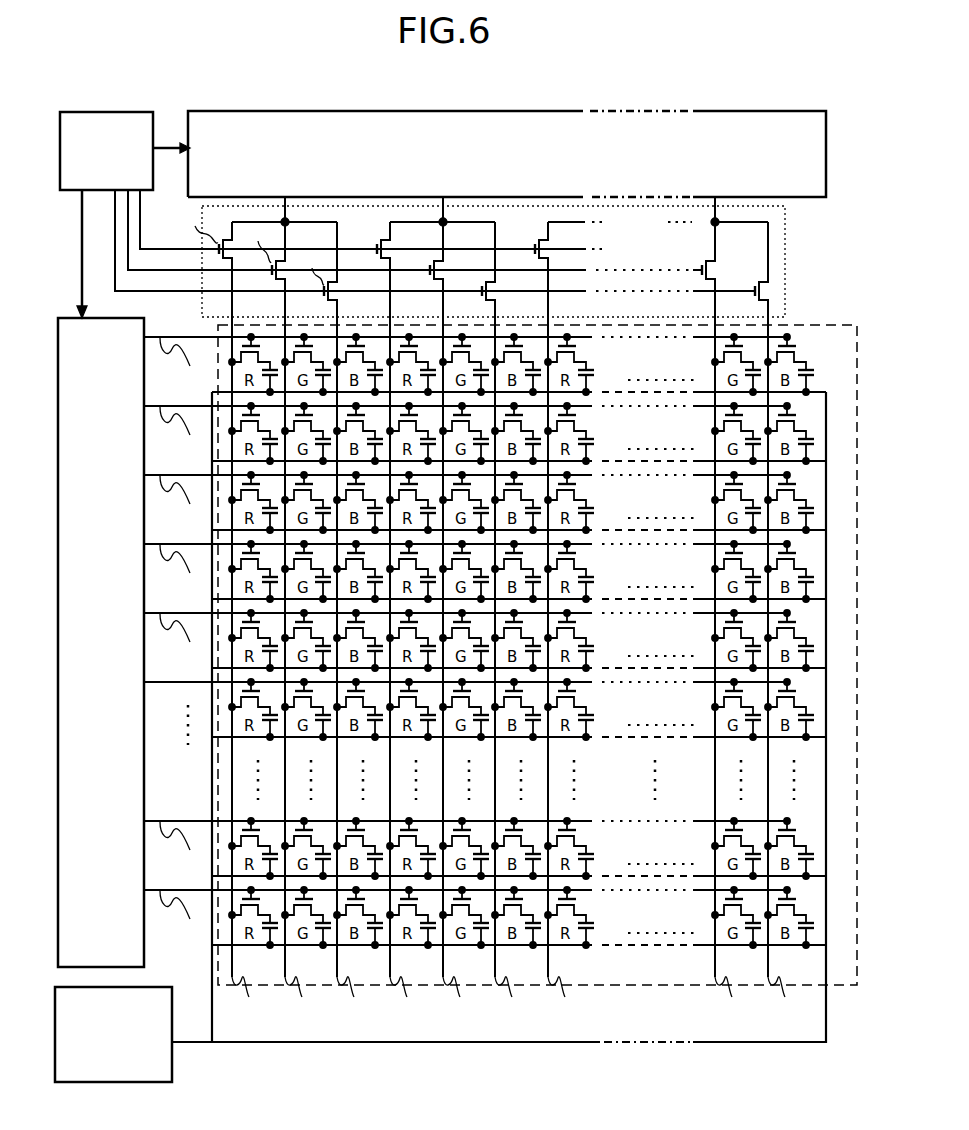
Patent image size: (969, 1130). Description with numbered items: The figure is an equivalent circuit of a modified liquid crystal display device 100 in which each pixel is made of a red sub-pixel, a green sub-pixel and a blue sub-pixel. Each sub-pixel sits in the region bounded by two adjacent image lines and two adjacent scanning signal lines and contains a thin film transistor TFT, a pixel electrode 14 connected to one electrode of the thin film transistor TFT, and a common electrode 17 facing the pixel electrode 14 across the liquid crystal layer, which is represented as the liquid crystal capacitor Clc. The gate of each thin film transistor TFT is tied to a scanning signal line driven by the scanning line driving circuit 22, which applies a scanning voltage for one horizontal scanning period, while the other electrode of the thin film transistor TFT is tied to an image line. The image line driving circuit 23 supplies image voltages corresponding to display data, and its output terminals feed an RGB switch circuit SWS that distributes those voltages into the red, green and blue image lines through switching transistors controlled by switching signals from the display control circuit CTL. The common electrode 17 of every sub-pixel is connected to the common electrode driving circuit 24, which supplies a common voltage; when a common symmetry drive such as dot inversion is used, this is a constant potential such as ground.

The liquid crystal display panel / pixel array 100 is at (507, 661).
The pixel electrode 14 is at (812, 372).
The common electrode 17 is at (600, 462).
The scanning line driving circuit 22 is at (58, 795).
The image line driving circuit 23 is at (720, 111).
The common electrode driving circuit 24 is at (55, 1030).
The display control circuit CTL is at (110, 112).
The RGB switch circuit SWS is at (785, 272).
The thin film transistor TFT is at (575, 347).
The liquid crystal capacitor Clc is at (809, 443).